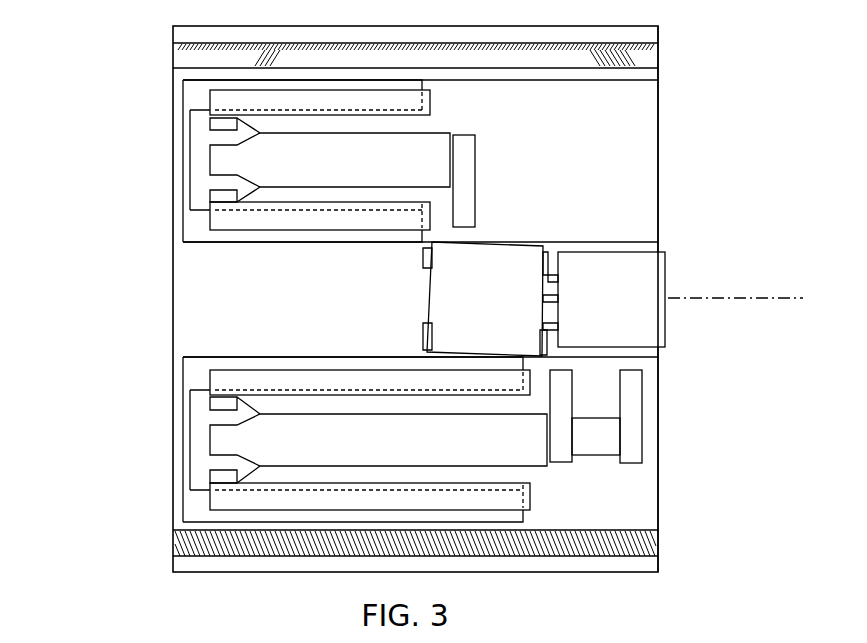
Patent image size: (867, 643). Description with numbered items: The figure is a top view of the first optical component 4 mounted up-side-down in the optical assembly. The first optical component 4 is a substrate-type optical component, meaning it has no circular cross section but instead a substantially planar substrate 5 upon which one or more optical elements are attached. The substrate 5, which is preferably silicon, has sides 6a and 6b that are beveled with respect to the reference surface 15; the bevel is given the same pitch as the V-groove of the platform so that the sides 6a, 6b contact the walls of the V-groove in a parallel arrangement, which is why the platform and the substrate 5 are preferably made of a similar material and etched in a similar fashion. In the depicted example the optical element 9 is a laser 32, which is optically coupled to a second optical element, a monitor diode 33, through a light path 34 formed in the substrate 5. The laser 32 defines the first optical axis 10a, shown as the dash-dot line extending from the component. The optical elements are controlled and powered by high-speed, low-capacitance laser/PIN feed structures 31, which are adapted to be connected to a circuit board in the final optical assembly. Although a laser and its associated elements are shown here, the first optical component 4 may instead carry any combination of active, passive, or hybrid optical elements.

The first optical component 4 is at (108, 145).
The substrate 5 is at (658, 195).
The side 6a is at (648, 57).
The side 6b is at (648, 550).
The reference surface 15 is at (643, 145).
The laser/PIN feed structures 31 is at (215, 442).
The monitor diode 33 is at (457, 312).
The light path 34 is at (553, 288).
The optical element 9 is at (656, 308).
The laser 32 is at (652, 328).
The first optical axis 10a is at (780, 297).